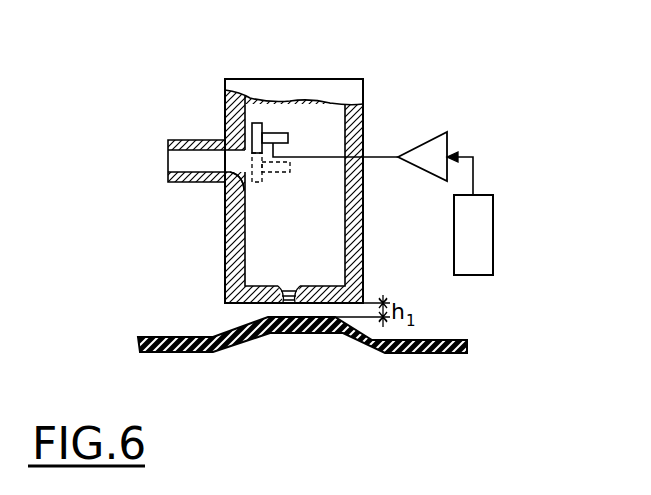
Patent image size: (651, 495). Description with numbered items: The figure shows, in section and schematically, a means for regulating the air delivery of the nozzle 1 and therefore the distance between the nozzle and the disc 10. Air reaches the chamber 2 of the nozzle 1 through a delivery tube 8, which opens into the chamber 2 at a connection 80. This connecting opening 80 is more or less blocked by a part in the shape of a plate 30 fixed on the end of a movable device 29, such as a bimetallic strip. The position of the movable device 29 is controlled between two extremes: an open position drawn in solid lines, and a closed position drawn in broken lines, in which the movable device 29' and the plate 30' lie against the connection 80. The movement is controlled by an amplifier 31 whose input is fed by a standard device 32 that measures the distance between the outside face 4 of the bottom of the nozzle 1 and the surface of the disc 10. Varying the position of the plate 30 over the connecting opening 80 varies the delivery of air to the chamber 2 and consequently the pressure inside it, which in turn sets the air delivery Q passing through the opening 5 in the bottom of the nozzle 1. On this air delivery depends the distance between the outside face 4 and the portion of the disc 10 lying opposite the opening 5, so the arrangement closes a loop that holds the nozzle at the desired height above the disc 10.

The nozzle 1 is at (206, 231).
The chamber 2 is at (302, 246).
The outside face 4 is at (225, 303).
The opening 5 is at (293, 287).
The delivery tube 8 is at (190, 140).
The connection 80 is at (226, 191).
The disc 10 is at (436, 340).
The movable device 29 is at (330, 101).
The movable device in closed position 29' is at (303, 183).
The plate 30 is at (277, 99).
The plate in closed position 30' is at (278, 185).
The amplifier 31 is at (433, 135).
The device for measuring the distance 32 is at (494, 228).